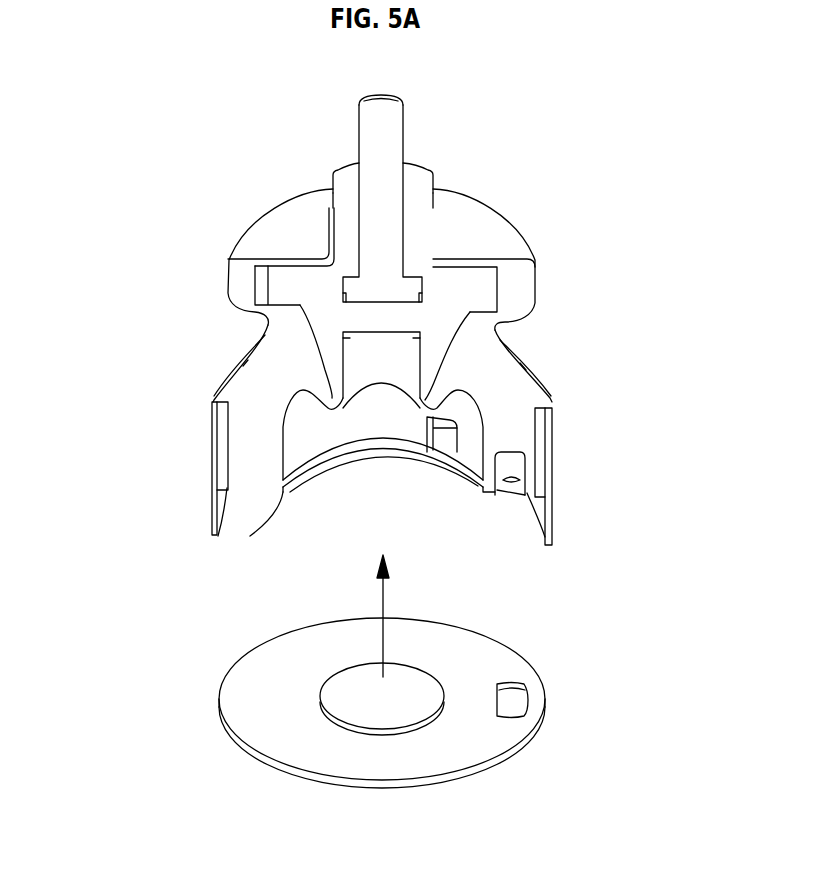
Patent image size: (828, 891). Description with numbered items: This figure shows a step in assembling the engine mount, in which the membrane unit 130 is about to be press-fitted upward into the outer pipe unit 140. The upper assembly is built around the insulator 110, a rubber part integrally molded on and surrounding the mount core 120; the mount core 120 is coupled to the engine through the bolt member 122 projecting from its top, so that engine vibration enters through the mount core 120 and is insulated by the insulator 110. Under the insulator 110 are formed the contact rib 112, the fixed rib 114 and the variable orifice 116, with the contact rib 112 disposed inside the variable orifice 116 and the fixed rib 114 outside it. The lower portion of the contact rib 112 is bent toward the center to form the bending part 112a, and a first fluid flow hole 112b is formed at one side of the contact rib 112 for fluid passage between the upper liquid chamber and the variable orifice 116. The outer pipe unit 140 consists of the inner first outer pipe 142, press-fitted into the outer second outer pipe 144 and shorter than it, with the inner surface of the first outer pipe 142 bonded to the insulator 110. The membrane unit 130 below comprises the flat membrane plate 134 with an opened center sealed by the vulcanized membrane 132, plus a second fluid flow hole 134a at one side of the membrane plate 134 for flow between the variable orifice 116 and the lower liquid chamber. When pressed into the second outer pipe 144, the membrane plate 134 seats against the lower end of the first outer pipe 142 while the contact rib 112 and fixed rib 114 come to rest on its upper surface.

The insulator 110 is at (523, 215).
The contact rib 112 is at (277, 467).
The bending part 112a is at (283, 480).
The first fluid flow hole 112b is at (428, 463).
The fixed rib 114 is at (215, 497).
The variable orifice 116 is at (507, 483).
The mount core 120 is at (462, 283).
The bolt member 122 is at (368, 130).
The membrane unit 130 is at (429, 743).
The membrane 132 is at (427, 725).
The membrane plate 134 is at (500, 750).
The second fluid flow hole 134a is at (528, 697).
The outer pipe unit 140 is at (372, 473).
The first outer pipe 142 is at (227, 477).
The second outer pipe 144 is at (213, 413).